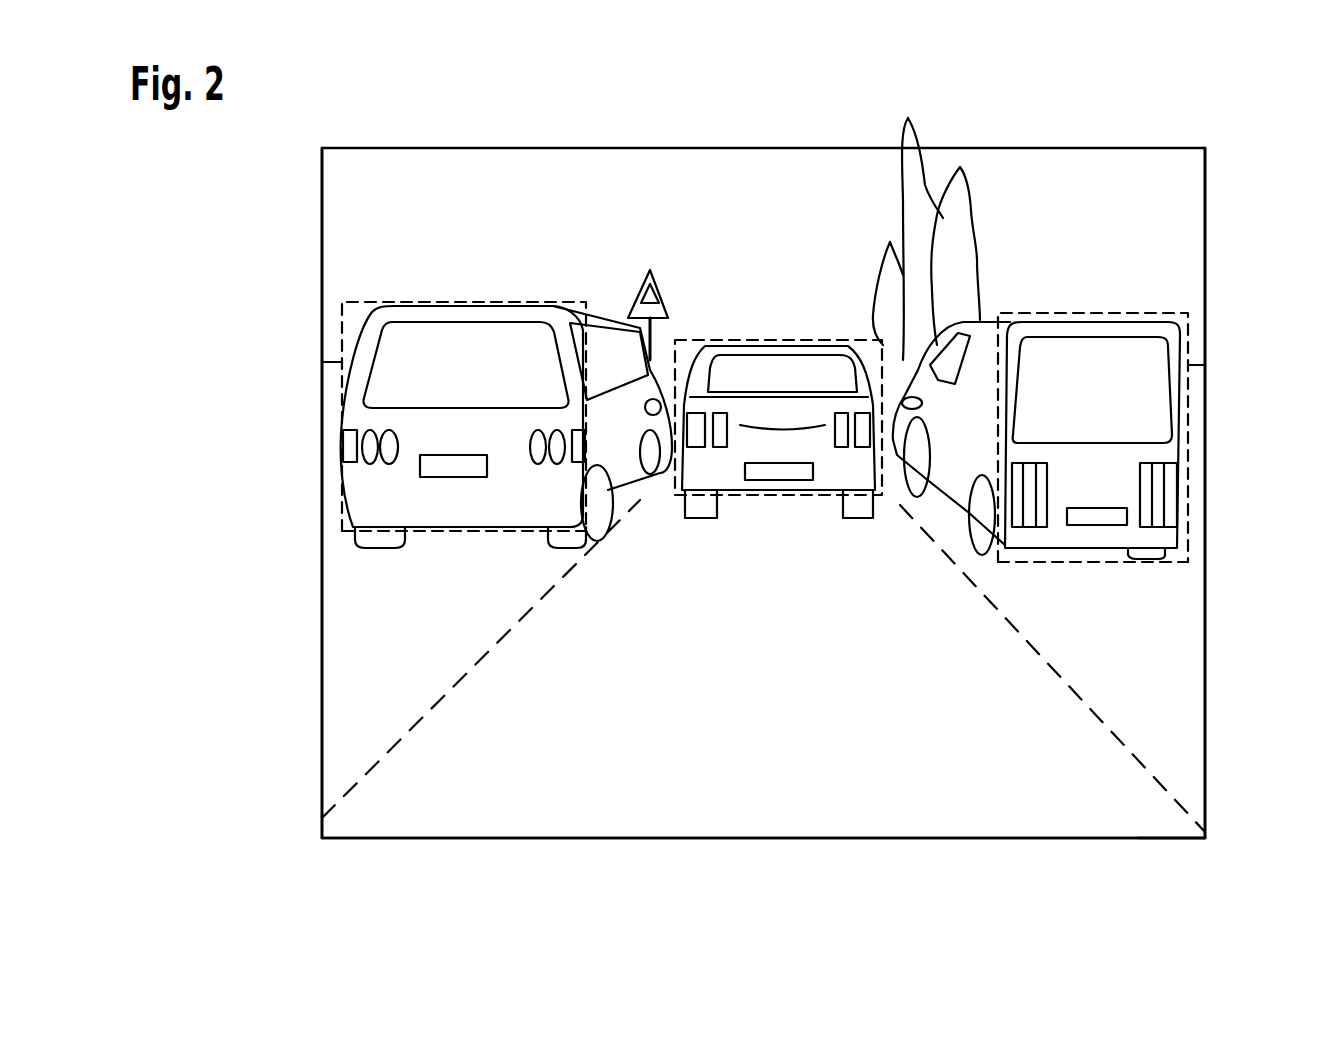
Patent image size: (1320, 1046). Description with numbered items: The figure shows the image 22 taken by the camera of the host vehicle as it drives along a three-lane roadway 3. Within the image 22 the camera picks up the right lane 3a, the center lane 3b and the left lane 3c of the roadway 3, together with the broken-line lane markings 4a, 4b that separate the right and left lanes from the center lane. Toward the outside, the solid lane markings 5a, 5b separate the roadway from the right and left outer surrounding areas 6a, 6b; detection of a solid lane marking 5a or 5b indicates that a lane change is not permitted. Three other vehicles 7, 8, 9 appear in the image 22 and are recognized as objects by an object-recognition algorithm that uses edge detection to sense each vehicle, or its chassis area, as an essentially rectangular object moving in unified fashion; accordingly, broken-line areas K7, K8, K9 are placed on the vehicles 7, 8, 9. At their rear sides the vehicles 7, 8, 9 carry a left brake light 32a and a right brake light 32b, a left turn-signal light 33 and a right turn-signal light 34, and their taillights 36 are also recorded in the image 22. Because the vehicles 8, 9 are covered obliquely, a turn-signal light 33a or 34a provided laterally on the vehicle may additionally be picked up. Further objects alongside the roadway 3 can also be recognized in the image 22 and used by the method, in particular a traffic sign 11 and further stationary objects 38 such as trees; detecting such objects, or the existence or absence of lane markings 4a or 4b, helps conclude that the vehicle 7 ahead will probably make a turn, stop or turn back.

The image 22 is at (322, 182).
The roadway 3 is at (1168, 658).
The right lane 3a is at (1175, 707).
The center lane 3b is at (1138, 817).
The left lane 3c is at (322, 683).
The broken-line lane marking 4a is at (1167, 777).
The broken-line lane marking 4b is at (365, 758).
The solid lane marking 5a is at (1185, 523).
The solid lane marking 5b is at (343, 522).
The right outer surrounding area 6a is at (1195, 380).
The left outer surrounding area 6b is at (332, 383).
The vehicle 7 is at (790, 355).
The vehicle 8 is at (457, 330).
The vehicle 9 is at (1090, 330).
The traffic sign 11 is at (657, 285).
The area K7 is at (728, 340).
The area K8 is at (342, 303).
The area K9 is at (1175, 313).
The left brake light 32a is at (345, 452).
The right brake light 32b is at (557, 466).
The left turn-signal light 33 is at (345, 437).
The lateral turn-signal light 33a is at (905, 345).
The right turn-signal light 34 is at (587, 530).
The lateral turn-signal light 34a is at (642, 380).
The taillight 36 is at (362, 466).
The stationary object 38 is at (926, 226).